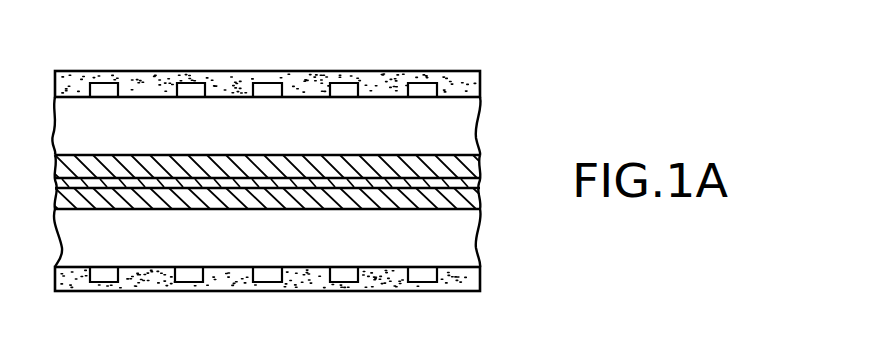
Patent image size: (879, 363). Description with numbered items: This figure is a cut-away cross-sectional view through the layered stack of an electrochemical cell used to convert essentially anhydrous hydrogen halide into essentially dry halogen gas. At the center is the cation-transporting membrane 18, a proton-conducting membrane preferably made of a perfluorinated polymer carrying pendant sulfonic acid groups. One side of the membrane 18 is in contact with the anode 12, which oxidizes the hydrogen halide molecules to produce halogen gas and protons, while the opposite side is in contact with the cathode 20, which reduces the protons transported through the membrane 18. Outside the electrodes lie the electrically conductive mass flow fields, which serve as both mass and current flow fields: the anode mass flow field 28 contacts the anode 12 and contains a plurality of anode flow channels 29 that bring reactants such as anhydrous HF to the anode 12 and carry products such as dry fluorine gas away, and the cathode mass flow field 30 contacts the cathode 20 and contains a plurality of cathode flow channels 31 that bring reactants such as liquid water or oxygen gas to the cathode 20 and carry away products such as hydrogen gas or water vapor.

The anode 12 is at (85, 155).
The cation-transporting membrane 18 is at (473, 183).
The cathode 20 is at (85, 210).
The anode mass flow field 28 is at (196, 72).
The anode flow channels 29 is at (110, 83).
The cathode mass flow field 30 is at (197, 293).
The cathode flow channels 31 is at (110, 293).